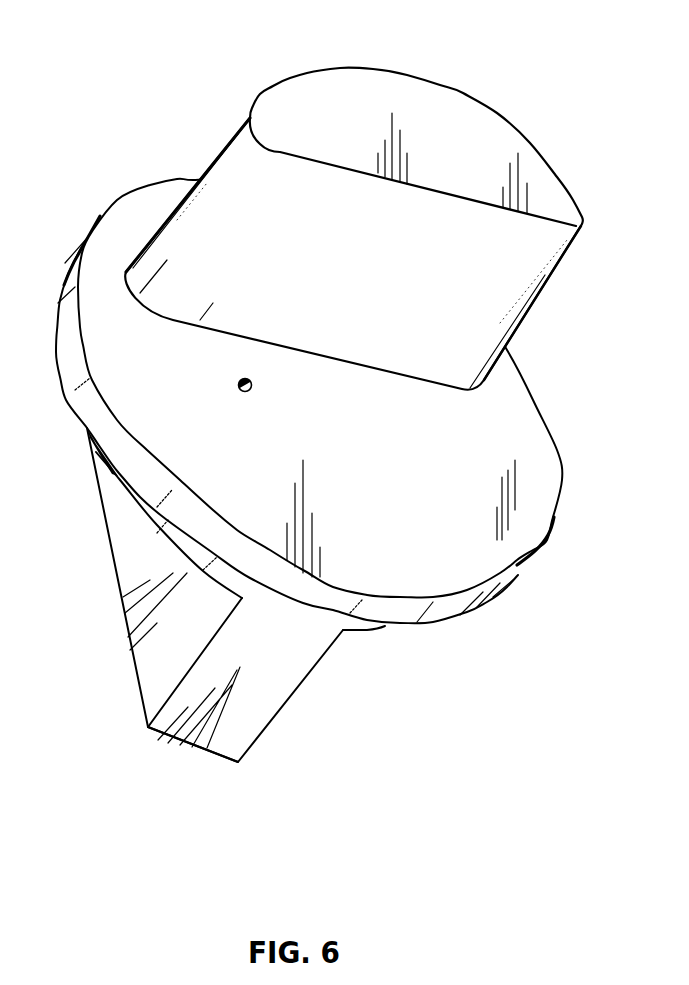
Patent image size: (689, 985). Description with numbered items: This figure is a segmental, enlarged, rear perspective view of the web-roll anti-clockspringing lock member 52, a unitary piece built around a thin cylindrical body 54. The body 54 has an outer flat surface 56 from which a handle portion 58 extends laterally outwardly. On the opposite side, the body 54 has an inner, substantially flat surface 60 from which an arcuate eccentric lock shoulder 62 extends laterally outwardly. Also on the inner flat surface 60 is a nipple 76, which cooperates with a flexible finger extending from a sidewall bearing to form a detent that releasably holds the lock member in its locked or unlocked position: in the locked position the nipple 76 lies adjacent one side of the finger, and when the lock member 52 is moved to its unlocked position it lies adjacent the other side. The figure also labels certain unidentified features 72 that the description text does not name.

The lock member 52 is at (110, 115).
The thin cylindrical body 54 is at (443, 613).
The outer flat surface 56 is at (127, 485).
The handle portion 58 is at (213, 747).
The inner flat surface 60 is at (500, 565).
The arcuate eccentric lock shoulder 62 is at (472, 121).
The side flanges 72 is at (233, 137).
The nipple 76 is at (241, 394).